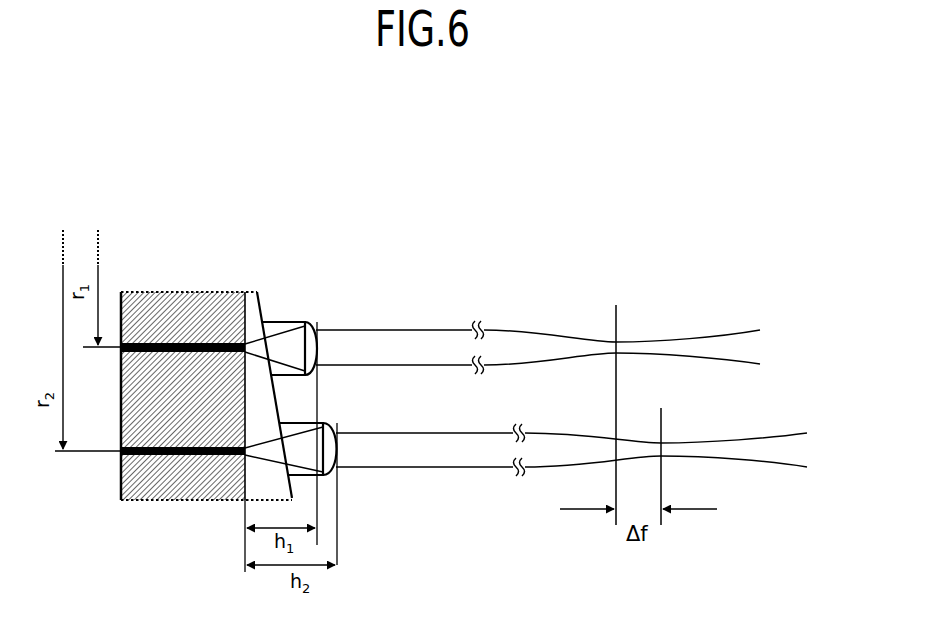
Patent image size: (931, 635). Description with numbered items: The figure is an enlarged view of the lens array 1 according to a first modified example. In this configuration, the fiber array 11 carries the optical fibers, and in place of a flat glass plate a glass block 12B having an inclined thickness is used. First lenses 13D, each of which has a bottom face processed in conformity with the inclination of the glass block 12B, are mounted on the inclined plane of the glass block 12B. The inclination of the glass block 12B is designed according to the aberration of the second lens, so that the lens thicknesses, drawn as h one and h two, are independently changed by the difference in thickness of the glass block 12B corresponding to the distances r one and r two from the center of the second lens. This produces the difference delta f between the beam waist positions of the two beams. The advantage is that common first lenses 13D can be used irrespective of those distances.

The lens array 1 is at (174, 209).
The fiber array 11 is at (165, 292).
The glass block 12B is at (257, 292).
The first lenses 13D is at (298, 322).